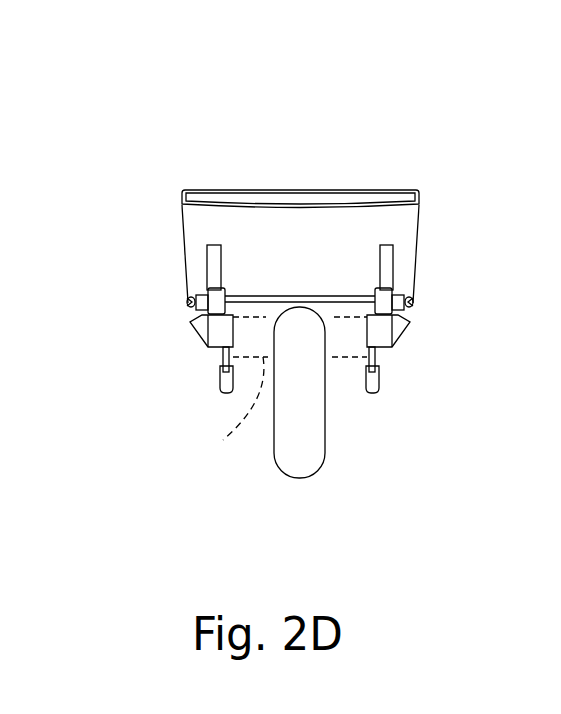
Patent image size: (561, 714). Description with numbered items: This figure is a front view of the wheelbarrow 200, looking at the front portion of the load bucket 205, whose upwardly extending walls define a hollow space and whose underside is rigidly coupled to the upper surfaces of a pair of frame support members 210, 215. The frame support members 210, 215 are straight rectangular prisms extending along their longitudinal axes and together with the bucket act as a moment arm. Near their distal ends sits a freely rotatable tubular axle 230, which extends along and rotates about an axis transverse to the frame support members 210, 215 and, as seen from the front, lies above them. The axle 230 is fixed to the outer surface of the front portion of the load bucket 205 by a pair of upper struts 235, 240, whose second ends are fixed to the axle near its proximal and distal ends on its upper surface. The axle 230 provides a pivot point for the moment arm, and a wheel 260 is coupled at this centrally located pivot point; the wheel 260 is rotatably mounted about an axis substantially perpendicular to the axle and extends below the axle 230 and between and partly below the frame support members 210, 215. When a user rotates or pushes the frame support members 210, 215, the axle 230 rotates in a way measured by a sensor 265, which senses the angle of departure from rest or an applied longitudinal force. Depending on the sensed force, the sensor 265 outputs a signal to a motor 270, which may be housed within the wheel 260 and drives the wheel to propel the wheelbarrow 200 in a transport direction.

The wheelbarrow 200 is at (389, 99).
The load bucket 205 is at (318, 255).
The frame support member 210 is at (405, 320).
The frame support member 215 is at (197, 320).
The axle 230 is at (190, 302).
The upper strut 235 is at (207, 270).
The upper strut 240 is at (393, 270).
The wheel 260 is at (290, 478).
The sensor 265 is at (218, 372).
The motor 270 is at (234, 417).